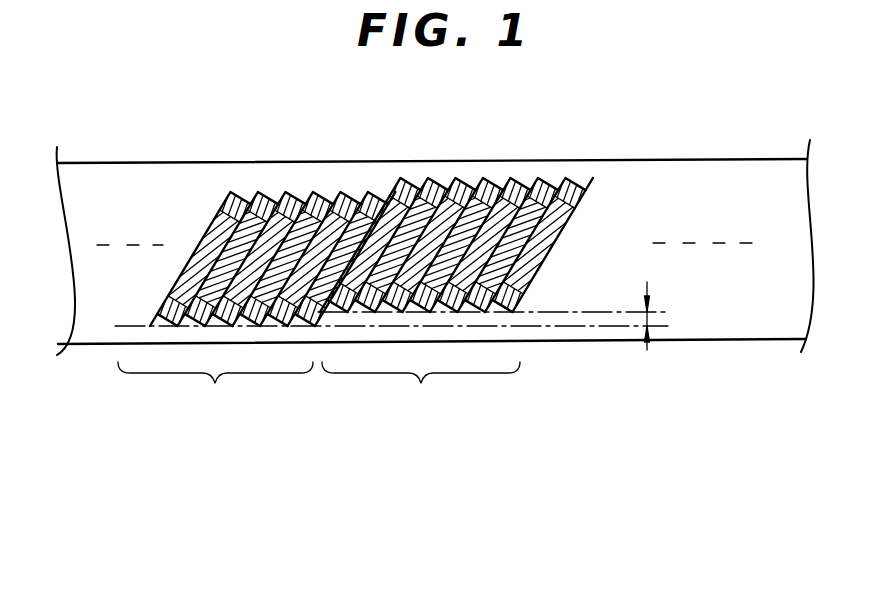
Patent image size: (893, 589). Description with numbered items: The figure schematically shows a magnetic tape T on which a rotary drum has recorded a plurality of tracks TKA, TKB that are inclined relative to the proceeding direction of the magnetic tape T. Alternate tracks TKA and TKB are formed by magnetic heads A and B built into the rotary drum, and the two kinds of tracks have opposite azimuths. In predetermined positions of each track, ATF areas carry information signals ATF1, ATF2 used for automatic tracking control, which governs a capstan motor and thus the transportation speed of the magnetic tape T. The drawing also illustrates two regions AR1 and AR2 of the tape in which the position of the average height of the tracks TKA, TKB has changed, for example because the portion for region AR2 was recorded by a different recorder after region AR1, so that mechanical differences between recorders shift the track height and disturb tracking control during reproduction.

The magnetic tape T is at (740, 159).
The track TKA is at (411, 181).
The track TKB is at (440, 182).
The ATF signal ATF1 is at (534, 278).
The ATF signal ATF2 is at (572, 213).
The region AR1 is at (391, 370).
The region AR2 is at (493, 363).